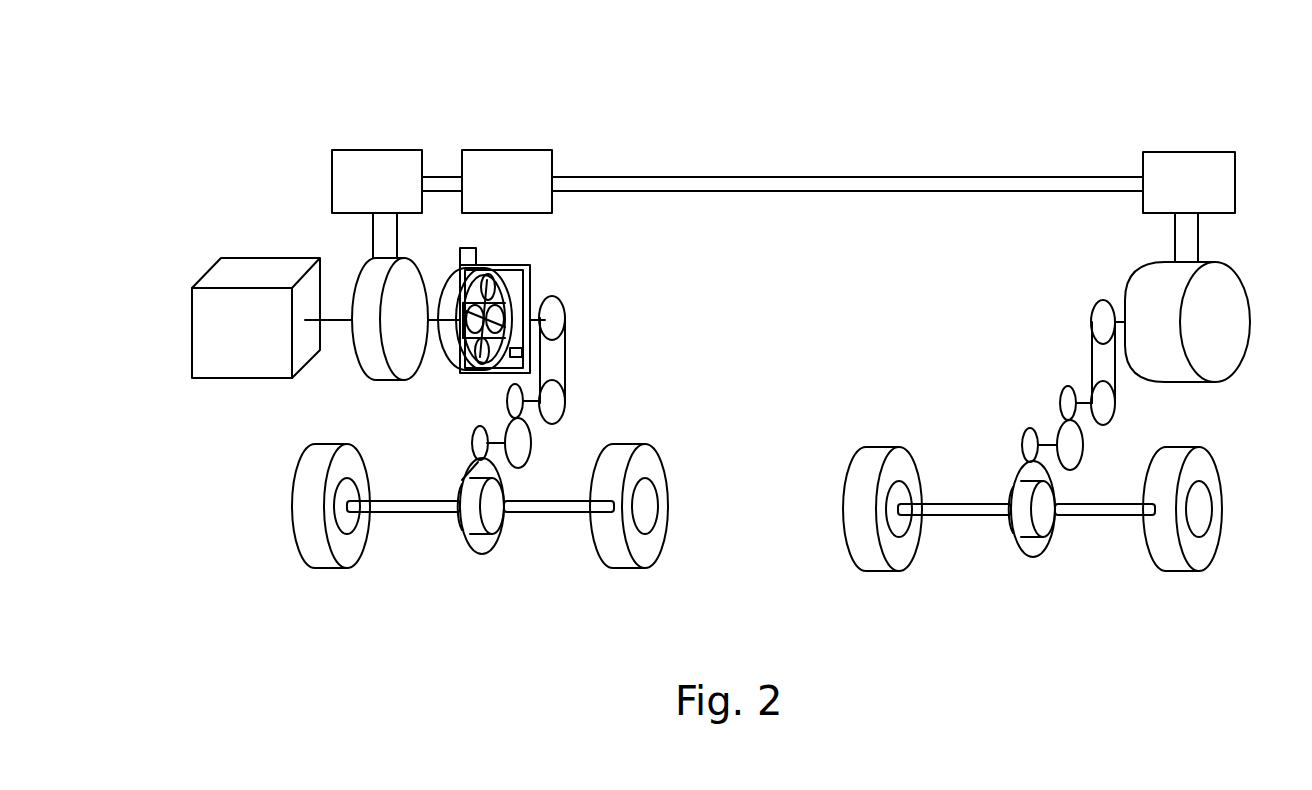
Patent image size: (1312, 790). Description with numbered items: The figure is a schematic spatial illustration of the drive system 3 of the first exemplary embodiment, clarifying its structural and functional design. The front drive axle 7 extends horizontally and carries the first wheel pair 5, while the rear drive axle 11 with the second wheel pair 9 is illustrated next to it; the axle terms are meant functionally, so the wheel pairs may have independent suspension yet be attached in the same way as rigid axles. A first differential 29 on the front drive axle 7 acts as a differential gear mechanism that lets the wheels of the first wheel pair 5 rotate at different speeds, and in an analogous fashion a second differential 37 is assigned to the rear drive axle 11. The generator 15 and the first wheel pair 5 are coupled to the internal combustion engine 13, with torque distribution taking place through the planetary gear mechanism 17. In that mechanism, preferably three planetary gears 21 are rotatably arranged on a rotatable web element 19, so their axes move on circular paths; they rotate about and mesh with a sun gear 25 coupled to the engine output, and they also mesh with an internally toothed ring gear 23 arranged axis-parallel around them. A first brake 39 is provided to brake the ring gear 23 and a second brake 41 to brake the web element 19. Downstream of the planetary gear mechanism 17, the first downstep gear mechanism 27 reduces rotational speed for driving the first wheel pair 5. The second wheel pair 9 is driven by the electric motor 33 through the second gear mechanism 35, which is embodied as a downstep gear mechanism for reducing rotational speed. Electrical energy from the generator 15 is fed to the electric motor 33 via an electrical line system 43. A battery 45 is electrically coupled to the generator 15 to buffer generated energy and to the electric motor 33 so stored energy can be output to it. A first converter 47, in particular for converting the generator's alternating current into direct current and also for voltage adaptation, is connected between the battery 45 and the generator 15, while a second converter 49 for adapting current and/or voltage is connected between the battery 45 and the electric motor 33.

The drive system 3 is at (340, 130).
The first wheel pair 5 is at (310, 532).
The front drive axle 7 is at (403, 512).
The second wheel pair 9 is at (865, 553).
The rear drive axle 11 is at (1095, 516).
The internal combustion engine 13 is at (230, 272).
The generator 15 is at (370, 360).
The planetary gear mechanism 17 is at (574, 314).
The web element 19 is at (490, 304).
The planetary gears 21 is at (478, 338).
The ring gear 23 is at (455, 270).
The sun gear 25 is at (470, 336).
The first downstep gear mechanism 27 is at (572, 395).
The first differential 29 is at (478, 534).
The electric motor 33 is at (1228, 300).
The second gear mechanism 35 is at (1085, 300).
The second differential 37 is at (1018, 545).
The first brake 39 is at (470, 253).
The second brake 41 is at (515, 352).
The electrical line system 43 is at (740, 184).
The battery 45 is at (545, 158).
The first converter 47 is at (360, 158).
The second converter 49 is at (1185, 160).